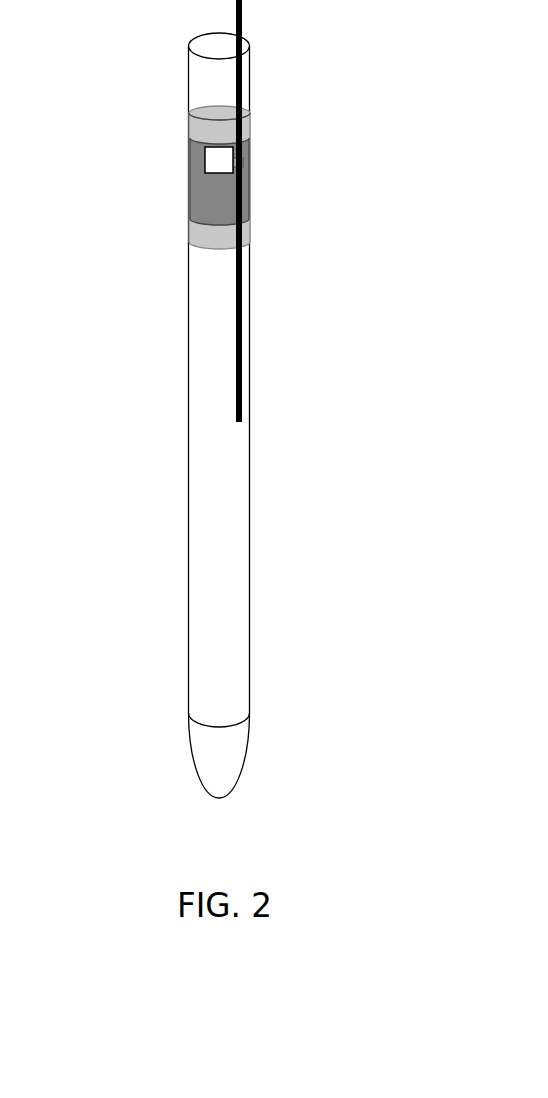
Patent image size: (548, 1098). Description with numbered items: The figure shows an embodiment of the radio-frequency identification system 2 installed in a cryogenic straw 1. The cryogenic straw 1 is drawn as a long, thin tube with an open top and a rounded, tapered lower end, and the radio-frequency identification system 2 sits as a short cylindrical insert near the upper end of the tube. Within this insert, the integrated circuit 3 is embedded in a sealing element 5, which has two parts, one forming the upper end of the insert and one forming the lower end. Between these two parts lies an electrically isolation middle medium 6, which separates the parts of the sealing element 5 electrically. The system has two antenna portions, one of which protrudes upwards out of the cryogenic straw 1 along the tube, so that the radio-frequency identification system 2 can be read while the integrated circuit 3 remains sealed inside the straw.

The cryogenic straw 1 is at (117, 348).
The radio-frequency identification system 2 is at (234, 179).
The integrated circuit 3 is at (208, 188).
The sealing element 5 is at (191, 212).
The electrically isolation middle medium 6 is at (239, 212).